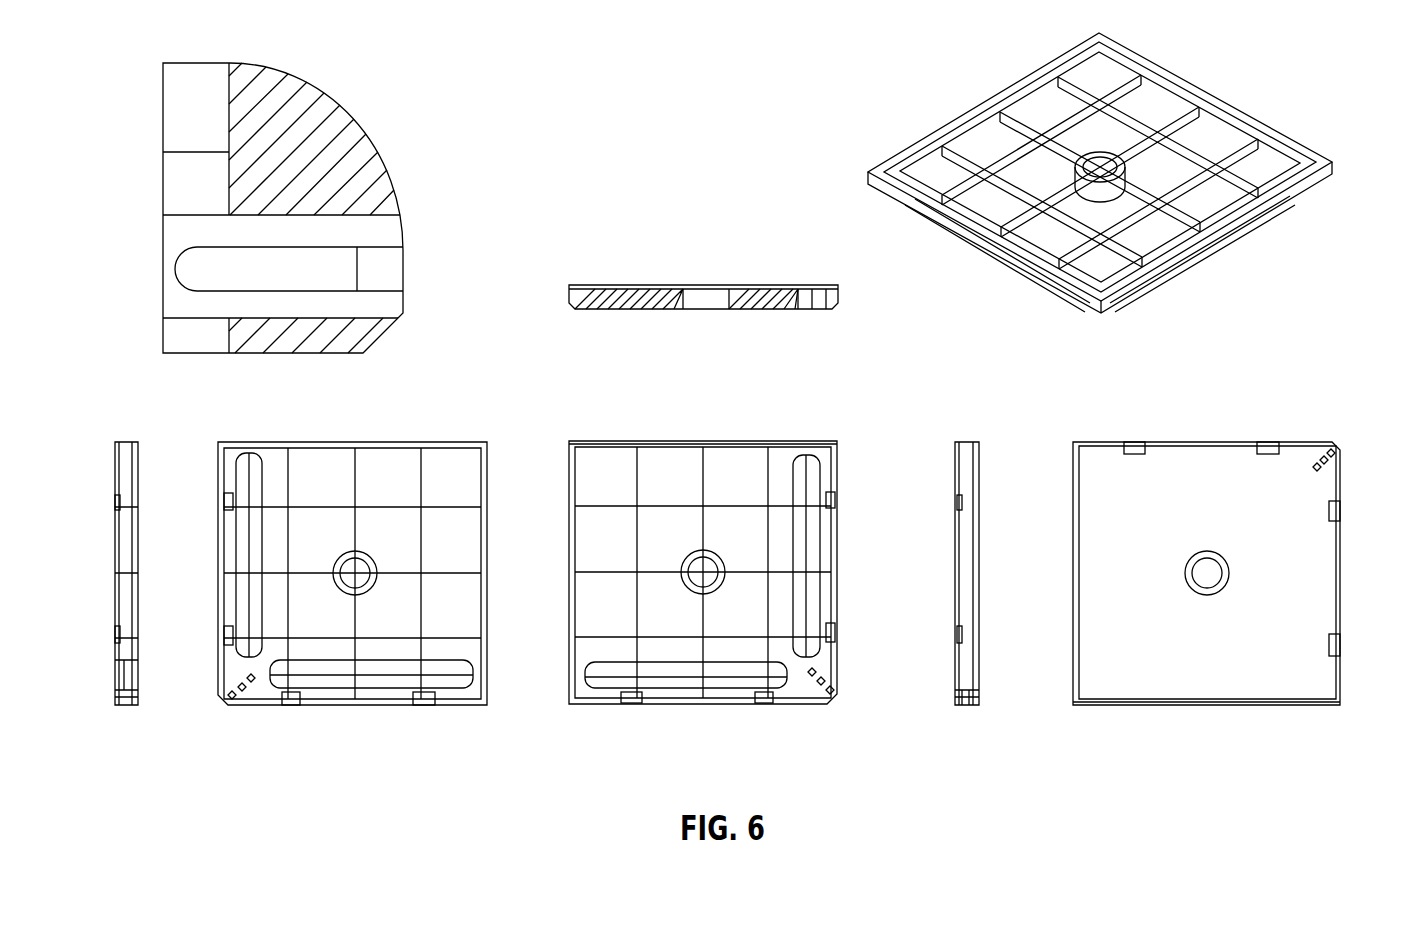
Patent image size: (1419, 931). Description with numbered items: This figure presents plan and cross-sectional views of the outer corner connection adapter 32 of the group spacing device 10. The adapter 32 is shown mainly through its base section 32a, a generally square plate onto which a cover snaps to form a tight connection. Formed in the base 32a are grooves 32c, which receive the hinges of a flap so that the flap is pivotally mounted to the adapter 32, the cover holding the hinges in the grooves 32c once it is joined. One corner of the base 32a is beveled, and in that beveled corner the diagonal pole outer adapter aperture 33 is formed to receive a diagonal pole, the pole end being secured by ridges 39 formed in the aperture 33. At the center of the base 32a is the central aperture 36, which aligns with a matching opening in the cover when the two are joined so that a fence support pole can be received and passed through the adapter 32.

The modular tray assembly 10 is at (593, 73).
The outer corner connection adapter 32 is at (767, 403).
The base section 32a is at (1340, 170).
The grooves 32c is at (223, 500).
The diagonal pole outer adapter aperture 33 is at (1337, 444).
The central aperture 36 is at (702, 572).
The ridges 39 is at (245, 535).